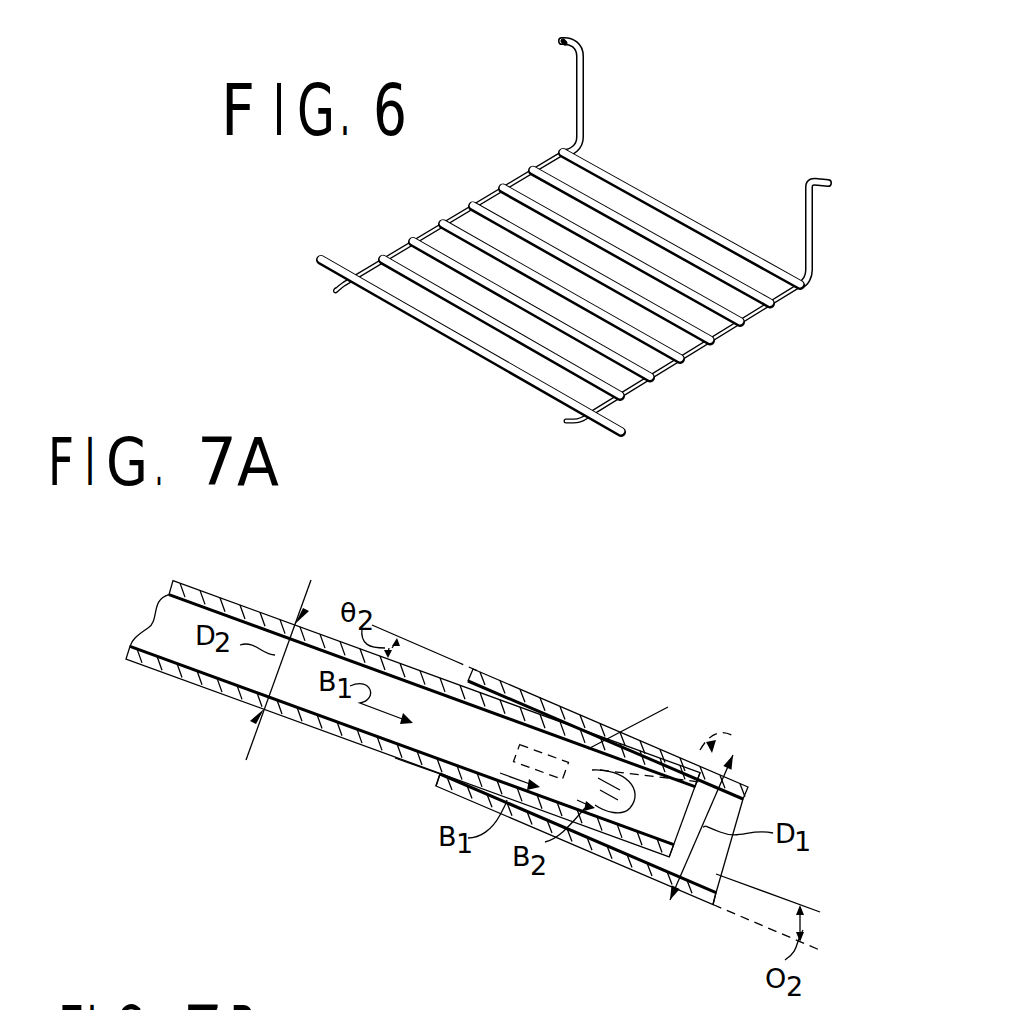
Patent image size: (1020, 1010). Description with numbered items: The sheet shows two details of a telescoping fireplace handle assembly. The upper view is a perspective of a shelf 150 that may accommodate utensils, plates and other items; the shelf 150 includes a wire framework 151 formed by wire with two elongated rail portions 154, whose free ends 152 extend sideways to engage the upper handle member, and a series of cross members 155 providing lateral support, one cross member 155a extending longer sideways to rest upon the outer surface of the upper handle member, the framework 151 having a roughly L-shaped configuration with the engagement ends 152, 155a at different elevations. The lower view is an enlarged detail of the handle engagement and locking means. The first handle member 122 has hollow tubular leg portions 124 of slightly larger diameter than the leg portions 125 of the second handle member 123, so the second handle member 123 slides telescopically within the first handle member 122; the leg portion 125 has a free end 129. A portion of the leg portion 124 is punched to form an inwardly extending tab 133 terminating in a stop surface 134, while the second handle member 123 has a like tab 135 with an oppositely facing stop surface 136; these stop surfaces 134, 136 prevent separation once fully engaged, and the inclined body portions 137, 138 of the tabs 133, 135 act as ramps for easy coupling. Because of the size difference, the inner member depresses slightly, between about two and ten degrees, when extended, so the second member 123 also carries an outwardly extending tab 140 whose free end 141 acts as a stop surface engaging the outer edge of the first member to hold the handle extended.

In FIG. 6, the shelf 150 is at (693, 149).
In FIG. 6, the wire framework 151 is at (712, 340).
In FIG. 6, the free ends 152 is at (581, 50).
In FIG. 6, the rail portions 154 is at (522, 178).
In FIG. 6, the cross members 155 is at (442, 224).
In FIG. 6, the cross member 155a is at (620, 431).
In FIG. 7A, the first handle member 122 is at (620, 787).
In FIG. 7A, the second handle member 123 is at (381, 719).
In FIG. 7A, the leg portions 124 is at (670, 750).
In FIG. 7A, the leg portions 125 is at (200, 690).
In FIG. 7A, the free end 129 is at (657, 868).
In FIG. 7A, the tab 133 is at (528, 740).
In FIG. 7A, the stop surface 134 is at (577, 757).
In FIG. 7A, the tab 135 is at (625, 815).
In FIG. 7A, the stop surface 136 is at (648, 723).
In FIG. 7A, the body portion 137 is at (543, 723).
In FIG. 7A, the body portion 138 is at (730, 745).
In FIG. 7A, the tab 140 is at (400, 760).
In FIG. 7A, the free end 141 is at (436, 786).